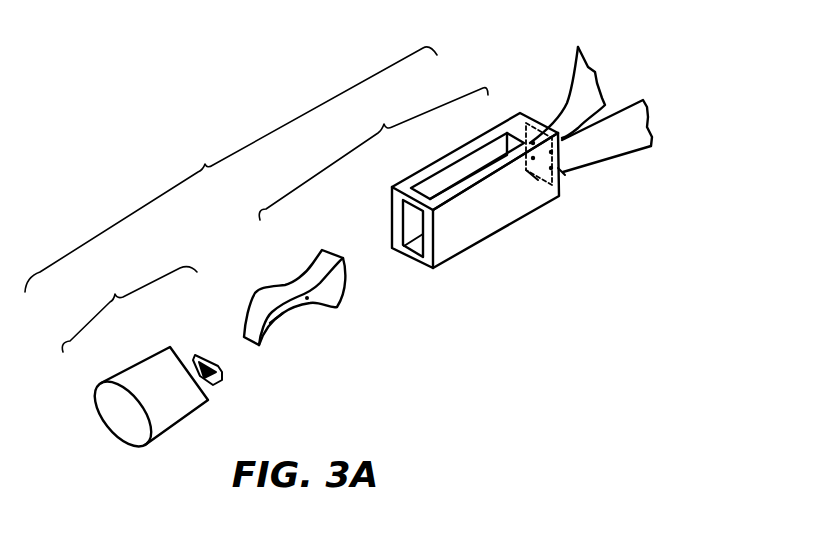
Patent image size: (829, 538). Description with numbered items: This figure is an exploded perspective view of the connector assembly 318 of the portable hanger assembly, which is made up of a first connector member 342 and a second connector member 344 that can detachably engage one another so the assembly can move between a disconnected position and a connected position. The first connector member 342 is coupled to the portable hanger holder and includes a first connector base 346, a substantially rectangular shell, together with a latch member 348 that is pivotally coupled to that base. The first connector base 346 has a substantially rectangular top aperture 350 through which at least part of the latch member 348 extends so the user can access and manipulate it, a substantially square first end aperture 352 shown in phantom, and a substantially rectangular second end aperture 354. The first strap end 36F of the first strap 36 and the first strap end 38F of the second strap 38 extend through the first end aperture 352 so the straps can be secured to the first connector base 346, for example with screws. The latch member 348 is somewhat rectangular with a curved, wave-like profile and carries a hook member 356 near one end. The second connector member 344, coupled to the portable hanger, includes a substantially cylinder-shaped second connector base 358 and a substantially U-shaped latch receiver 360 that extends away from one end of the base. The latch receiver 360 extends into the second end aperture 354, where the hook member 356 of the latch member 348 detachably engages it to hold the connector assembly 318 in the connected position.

The connector assembly 318 is at (205, 164).
The first connector member 342 is at (384, 126).
The second connector member 344 is at (115, 294).
The first connector base 346 is at (499, 225).
The latch member 348 is at (293, 280).
The top aperture 350 is at (470, 177).
The first end aperture 352 is at (538, 180).
The second end aperture 354 is at (415, 243).
The hook member 356 is at (268, 326).
The second connector base 358 is at (140, 380).
The latch receiver 360 is at (193, 355).
The first strap 36 is at (617, 143).
The first strap end 36F is at (560, 172).
The second strap 38 is at (575, 93).
The first strap end 38F is at (533, 143).